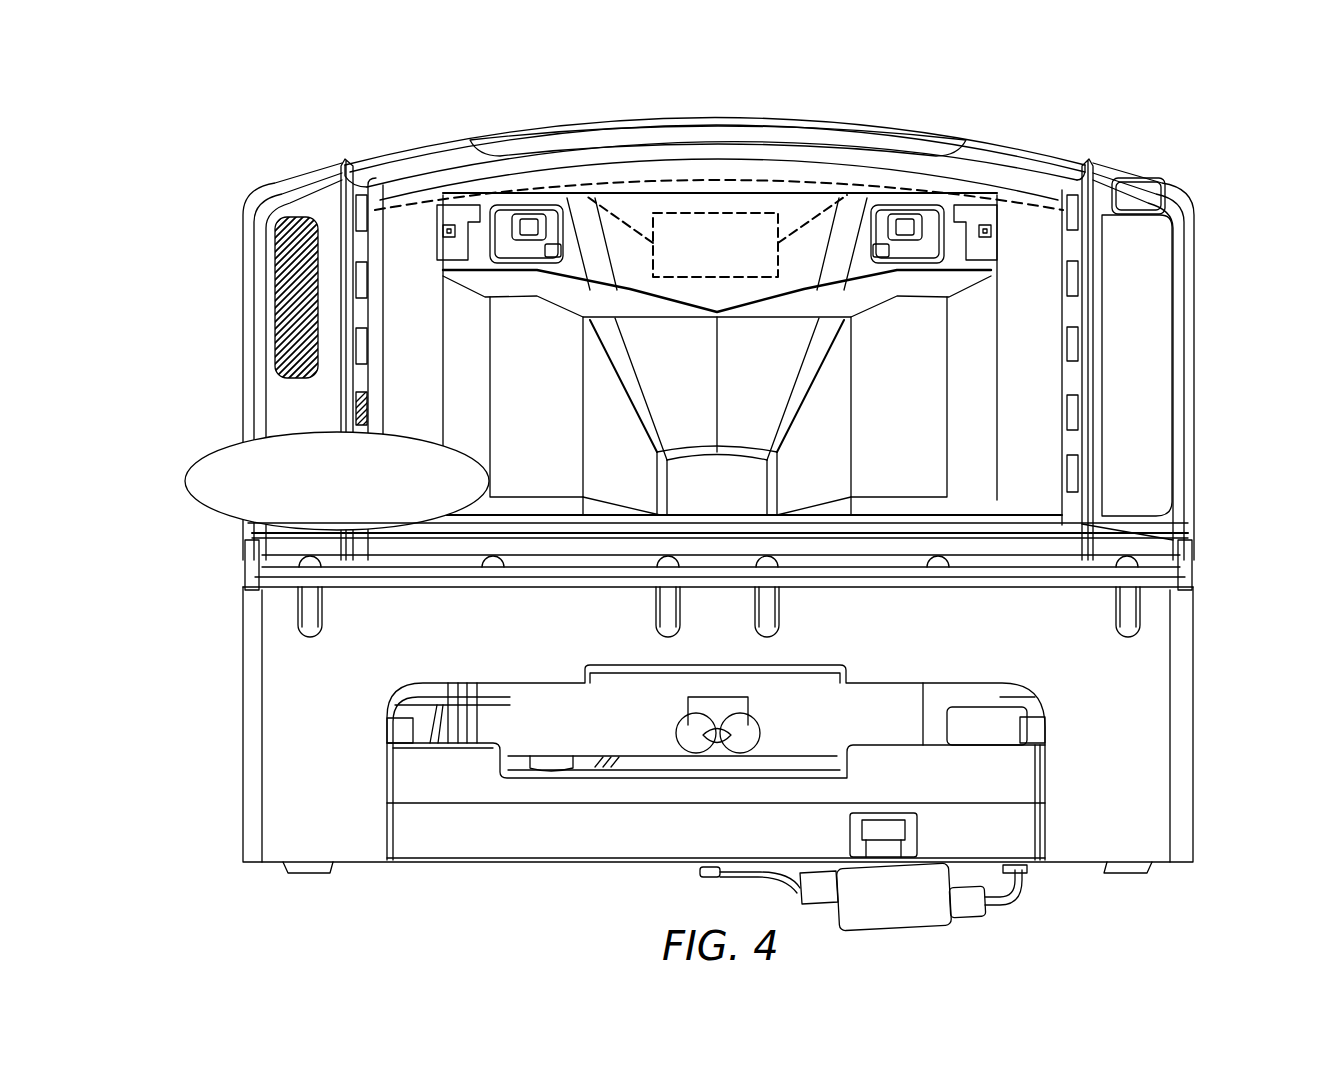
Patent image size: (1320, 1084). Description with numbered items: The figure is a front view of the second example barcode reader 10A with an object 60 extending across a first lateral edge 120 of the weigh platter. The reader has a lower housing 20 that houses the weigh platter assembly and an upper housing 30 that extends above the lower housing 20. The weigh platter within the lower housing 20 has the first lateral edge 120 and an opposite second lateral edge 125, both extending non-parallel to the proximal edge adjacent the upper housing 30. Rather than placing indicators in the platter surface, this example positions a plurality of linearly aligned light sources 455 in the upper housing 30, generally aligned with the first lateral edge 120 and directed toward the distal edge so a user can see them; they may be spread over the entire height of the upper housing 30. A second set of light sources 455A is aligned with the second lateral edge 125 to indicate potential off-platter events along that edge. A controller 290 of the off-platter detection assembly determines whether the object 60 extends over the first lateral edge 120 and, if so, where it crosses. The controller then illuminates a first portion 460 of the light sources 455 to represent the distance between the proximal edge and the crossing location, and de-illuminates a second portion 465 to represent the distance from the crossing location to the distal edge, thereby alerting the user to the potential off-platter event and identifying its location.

The barcode reader 10A is at (597, 83).
The upper housing 30 is at (406, 142).
The light sources 455 is at (360, 222).
The second set of light sources 455A is at (1075, 212).
The first portion of light sources 460 is at (373, 180).
The second portion of light sources 465 is at (377, 388).
The controller 290 is at (742, 259).
The object 60 is at (185, 483).
The first lateral edge 120 is at (248, 550).
The second lateral edge 125 is at (1195, 547).
The lower housing 20 is at (190, 801).